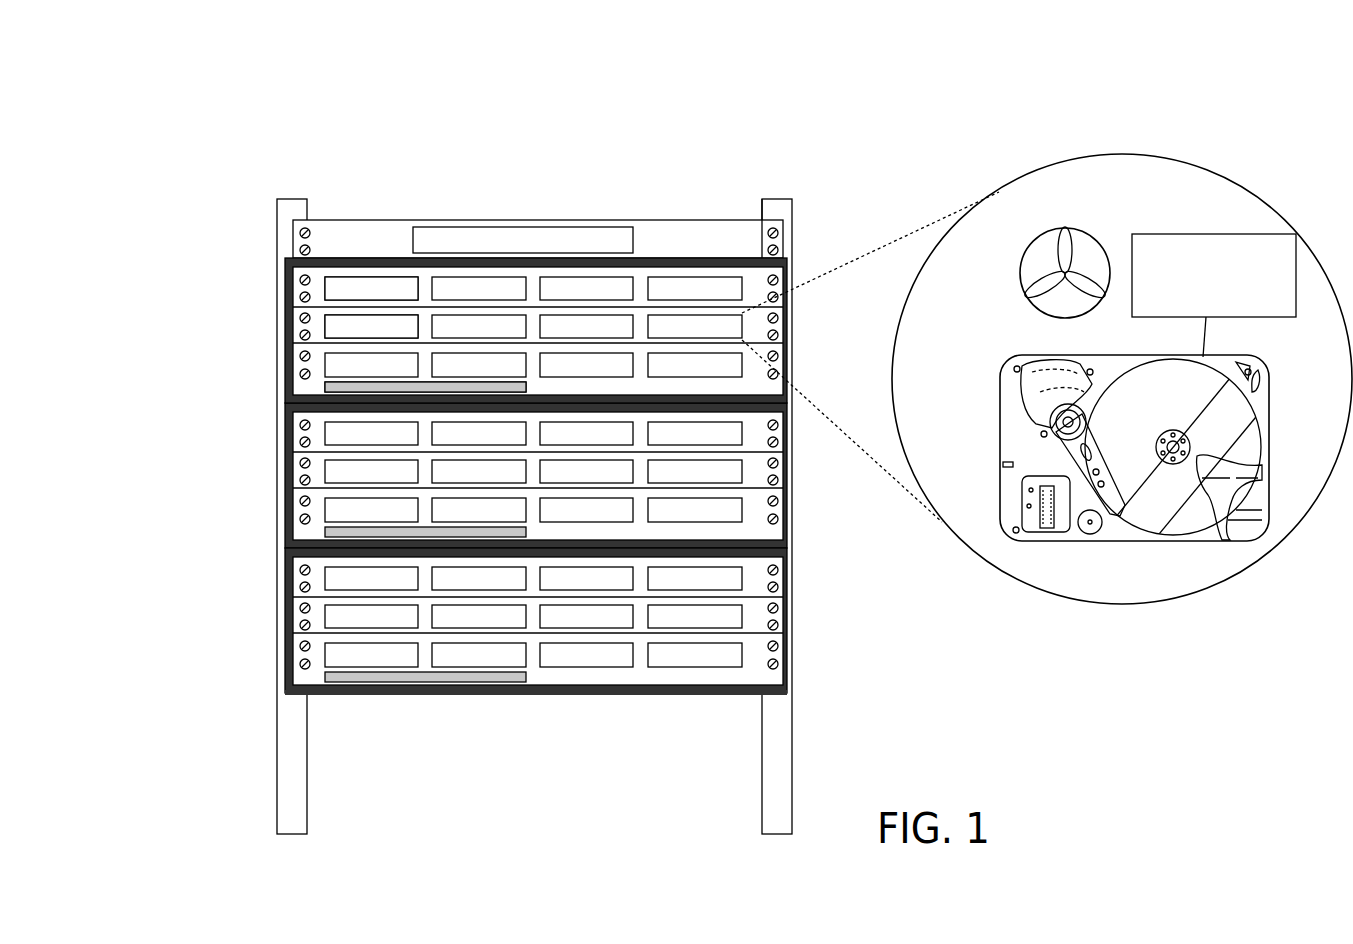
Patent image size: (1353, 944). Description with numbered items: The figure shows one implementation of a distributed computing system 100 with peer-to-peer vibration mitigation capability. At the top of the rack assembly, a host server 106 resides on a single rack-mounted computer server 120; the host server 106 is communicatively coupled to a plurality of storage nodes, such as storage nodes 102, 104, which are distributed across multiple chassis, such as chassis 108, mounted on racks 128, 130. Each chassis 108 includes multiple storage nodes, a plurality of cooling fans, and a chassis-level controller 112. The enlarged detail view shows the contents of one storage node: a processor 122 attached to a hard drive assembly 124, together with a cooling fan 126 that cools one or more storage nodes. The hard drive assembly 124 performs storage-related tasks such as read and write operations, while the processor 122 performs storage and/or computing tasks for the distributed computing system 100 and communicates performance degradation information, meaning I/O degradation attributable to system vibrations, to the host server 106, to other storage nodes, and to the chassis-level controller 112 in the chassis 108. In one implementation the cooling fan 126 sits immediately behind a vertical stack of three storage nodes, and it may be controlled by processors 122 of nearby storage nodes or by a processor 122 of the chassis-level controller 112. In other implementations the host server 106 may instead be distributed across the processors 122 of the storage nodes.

The distributed computing system 100 is at (296, 109).
The storage node 102 is at (325, 290).
The storage node 104 is at (325, 326).
The host server 106 is at (410, 234).
The chassis 108 is at (787, 268).
The chassis-level controller 112 is at (325, 387).
The rack-mounted computer server 120 is at (700, 237).
The processor 122 is at (1213, 234).
The hard drive assembly 124 is at (1000, 447).
The cooling fan 126 is at (1021, 287).
The rack 128 is at (290, 199).
The rack 130 is at (777, 197).